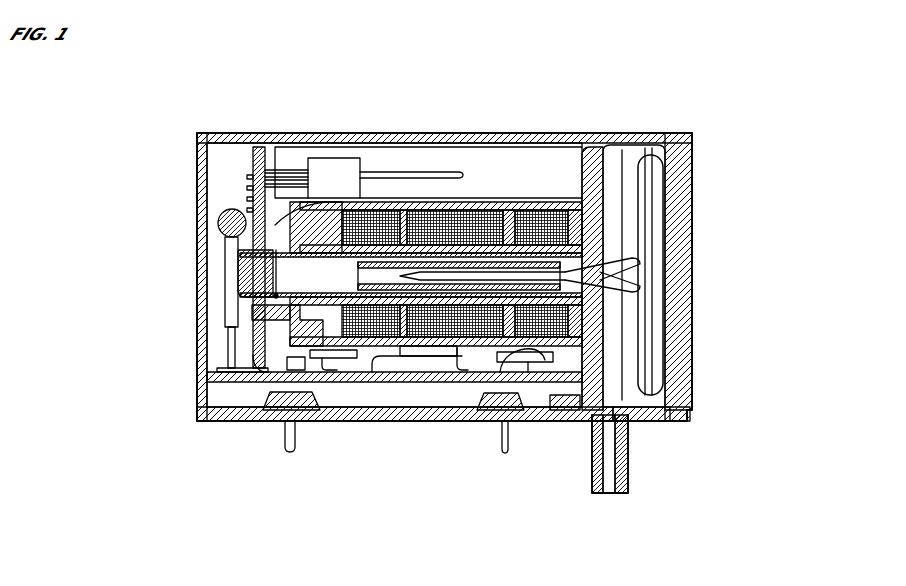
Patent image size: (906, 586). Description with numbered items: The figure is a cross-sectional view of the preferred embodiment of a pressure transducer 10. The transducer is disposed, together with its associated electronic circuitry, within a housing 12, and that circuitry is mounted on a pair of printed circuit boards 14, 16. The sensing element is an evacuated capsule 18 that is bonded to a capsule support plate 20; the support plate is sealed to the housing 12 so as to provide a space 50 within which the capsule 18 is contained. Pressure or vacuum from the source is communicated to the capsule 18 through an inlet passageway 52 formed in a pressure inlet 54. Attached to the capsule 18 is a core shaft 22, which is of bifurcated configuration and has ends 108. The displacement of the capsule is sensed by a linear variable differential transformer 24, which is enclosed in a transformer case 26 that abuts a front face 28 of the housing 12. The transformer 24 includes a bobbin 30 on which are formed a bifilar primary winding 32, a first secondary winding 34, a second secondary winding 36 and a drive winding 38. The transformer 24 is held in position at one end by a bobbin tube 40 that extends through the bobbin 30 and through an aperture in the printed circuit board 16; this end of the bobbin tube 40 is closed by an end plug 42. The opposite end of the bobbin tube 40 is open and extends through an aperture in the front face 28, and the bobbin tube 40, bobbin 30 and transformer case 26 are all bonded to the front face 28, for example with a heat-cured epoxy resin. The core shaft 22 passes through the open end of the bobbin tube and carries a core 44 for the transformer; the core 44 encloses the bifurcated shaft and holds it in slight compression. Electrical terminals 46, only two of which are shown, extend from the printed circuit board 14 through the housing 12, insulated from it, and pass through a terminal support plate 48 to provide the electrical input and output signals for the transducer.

The pressure transducer 10 is at (406, 114).
The housing 12 is at (283, 133).
The printed circuit board 14 is at (230, 378).
The printed circuit board 16 is at (255, 160).
The evacuated capsule 18 is at (648, 152).
The capsule support plate 20 is at (705, 270).
The core shaft 22 is at (645, 258).
The linear variable differential transformer 24 is at (455, 372).
The transformer case 26 is at (545, 402).
The front face 28 is at (605, 355).
The bobbin 30 is at (335, 372).
The bifilar primary winding 32 is at (390, 372).
The first secondary winding 34 is at (323, 421).
The second secondary winding 36 is at (548, 392).
The drive winding 38 is at (505, 362).
The bobbin tube 40 is at (242, 282).
The end plug 42 is at (250, 238).
The core 44 is at (470, 215).
The electrical terminals 46 is at (290, 425).
The terminal support plate 48 is at (430, 362).
The space 50 is at (645, 430).
The inlet passageway 52 is at (612, 493).
The pressure inlet 54 is at (590, 472).
The ends 108 is at (358, 275).